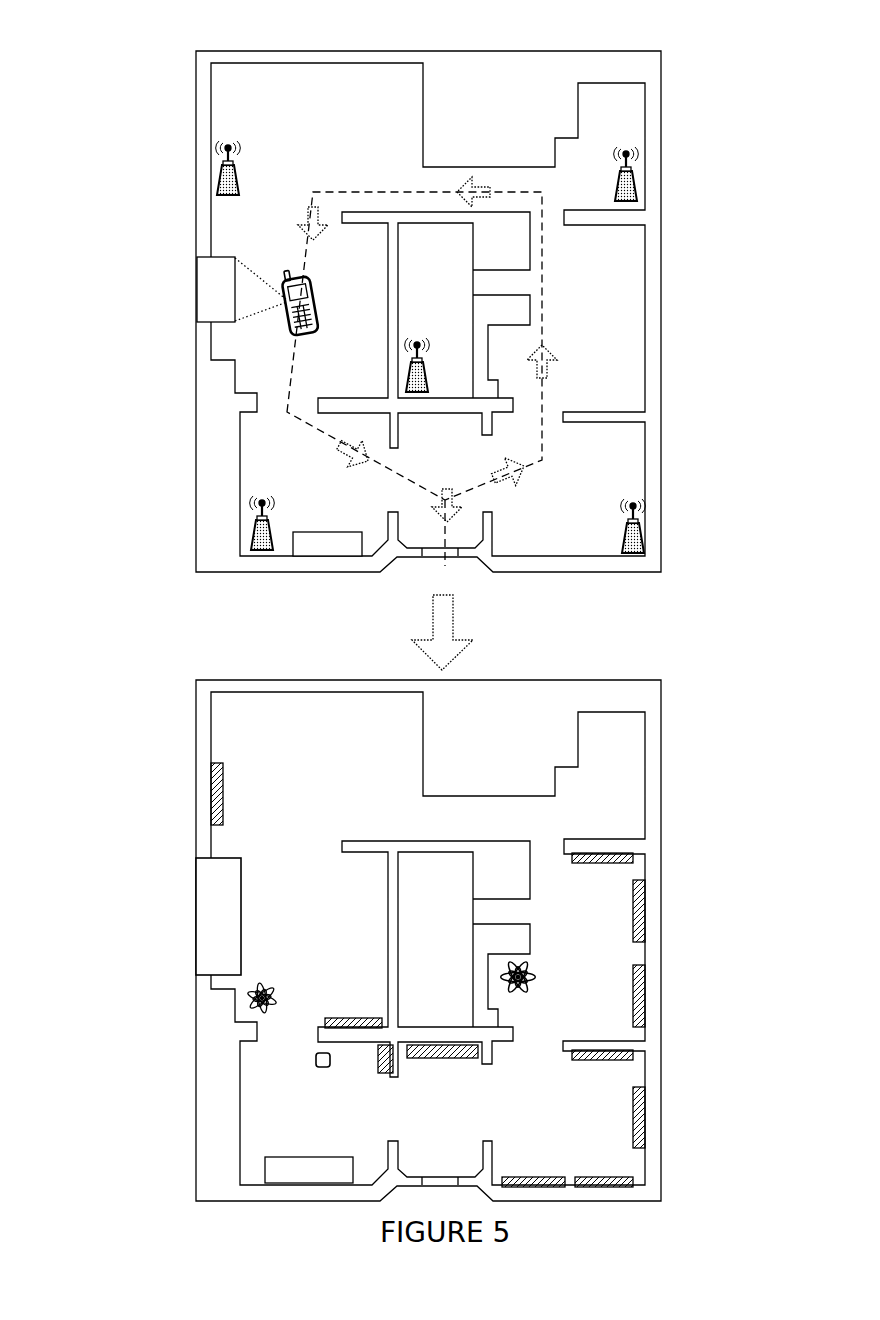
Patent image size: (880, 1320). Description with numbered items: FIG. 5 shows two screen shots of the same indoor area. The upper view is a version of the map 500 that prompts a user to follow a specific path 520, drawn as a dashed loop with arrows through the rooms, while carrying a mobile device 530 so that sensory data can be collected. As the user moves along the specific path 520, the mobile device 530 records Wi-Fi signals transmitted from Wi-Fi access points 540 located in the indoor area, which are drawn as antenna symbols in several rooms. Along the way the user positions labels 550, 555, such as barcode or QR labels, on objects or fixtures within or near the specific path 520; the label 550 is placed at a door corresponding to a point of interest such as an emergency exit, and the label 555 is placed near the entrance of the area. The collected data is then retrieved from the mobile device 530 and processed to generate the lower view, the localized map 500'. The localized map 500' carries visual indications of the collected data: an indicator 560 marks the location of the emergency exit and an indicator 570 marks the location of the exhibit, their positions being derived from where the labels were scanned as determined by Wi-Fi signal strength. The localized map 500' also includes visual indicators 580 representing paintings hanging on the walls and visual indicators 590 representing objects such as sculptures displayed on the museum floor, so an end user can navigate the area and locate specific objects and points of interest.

The map 500 is at (360, 294).
The localized map 500' is at (363, 923).
The specific path 520 is at (543, 312).
The mobile device 530 is at (289, 282).
The Wi-Fi access points 540 is at (220, 168).
The label 550 is at (210, 284).
The label 555 is at (323, 558).
The indicator 560 is at (196, 928).
The indicator 570 is at (278, 1157).
The visual indicators 580 is at (603, 866).
The visual indicators 590 is at (252, 1008).